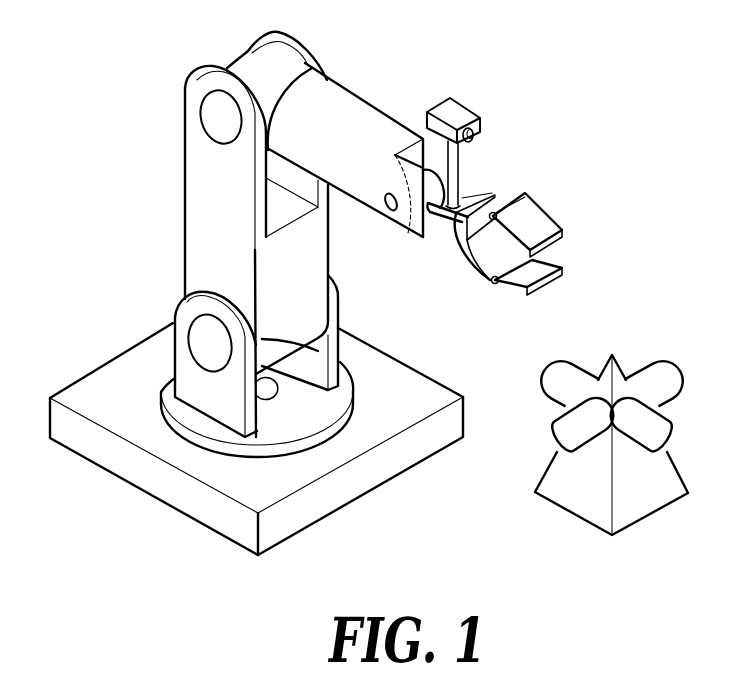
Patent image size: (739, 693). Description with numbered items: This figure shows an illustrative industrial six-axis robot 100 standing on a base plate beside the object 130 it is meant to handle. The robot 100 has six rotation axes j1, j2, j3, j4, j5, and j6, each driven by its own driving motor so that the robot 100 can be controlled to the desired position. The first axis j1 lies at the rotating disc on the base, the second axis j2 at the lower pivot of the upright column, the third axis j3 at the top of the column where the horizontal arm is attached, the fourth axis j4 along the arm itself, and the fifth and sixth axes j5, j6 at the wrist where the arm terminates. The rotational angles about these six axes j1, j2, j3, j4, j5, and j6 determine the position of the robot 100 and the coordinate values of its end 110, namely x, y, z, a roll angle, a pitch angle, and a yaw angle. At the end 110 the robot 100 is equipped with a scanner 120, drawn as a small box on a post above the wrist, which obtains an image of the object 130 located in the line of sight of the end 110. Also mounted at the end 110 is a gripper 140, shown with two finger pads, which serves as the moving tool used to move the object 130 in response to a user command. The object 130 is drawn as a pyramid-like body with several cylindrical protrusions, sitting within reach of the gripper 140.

The robot 100 is at (190, 177).
The end 110 is at (445, 221).
The scanner 120 is at (462, 112).
The object 130 is at (653, 372).
The gripper 140 is at (547, 222).
The first rotation axis j1 is at (268, 393).
The second rotation axis j2 is at (197, 323).
The third rotation axis j3 is at (206, 103).
The fourth rotation axis j4 is at (372, 105).
The fifth rotation axis j5 is at (389, 211).
The sixth rotation axis j6 is at (472, 190).